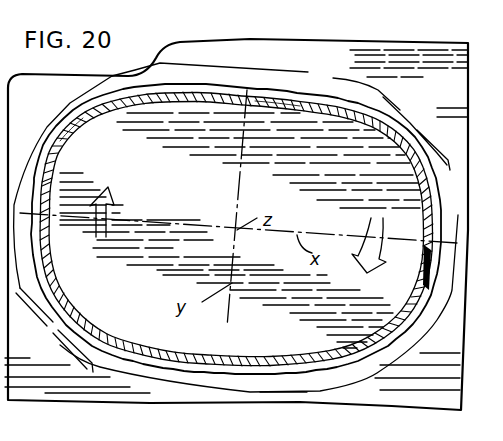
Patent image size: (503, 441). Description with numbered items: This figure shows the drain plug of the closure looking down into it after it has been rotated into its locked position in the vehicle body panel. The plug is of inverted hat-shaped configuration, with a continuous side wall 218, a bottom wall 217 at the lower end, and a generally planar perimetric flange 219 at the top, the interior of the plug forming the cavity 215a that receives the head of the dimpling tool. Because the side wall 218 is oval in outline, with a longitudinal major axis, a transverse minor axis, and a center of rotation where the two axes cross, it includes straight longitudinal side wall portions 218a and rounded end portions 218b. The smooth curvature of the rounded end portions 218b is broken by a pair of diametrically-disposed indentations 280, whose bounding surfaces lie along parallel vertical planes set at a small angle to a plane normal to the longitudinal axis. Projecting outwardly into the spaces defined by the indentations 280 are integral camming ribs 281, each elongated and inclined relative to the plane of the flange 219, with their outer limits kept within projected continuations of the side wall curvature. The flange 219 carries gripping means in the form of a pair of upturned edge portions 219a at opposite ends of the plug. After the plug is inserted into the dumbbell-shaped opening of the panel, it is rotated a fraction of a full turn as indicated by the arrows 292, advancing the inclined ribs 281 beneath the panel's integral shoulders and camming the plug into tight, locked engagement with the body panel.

The perimetric flange 219 is at (175, 64).
The upturned edge portions 219a is at (406, 100).
The side wall 218 is at (307, 106).
The straight longitudinal side wall portions 218a is at (270, 106).
The rounded end portions 218b is at (78, 137).
The ribs 281 is at (53, 170).
The arrows 292 is at (117, 197).
The indentations 280 is at (412, 285).
The cavity 215a is at (253, 392).
The bottom wall 217 is at (307, 345).